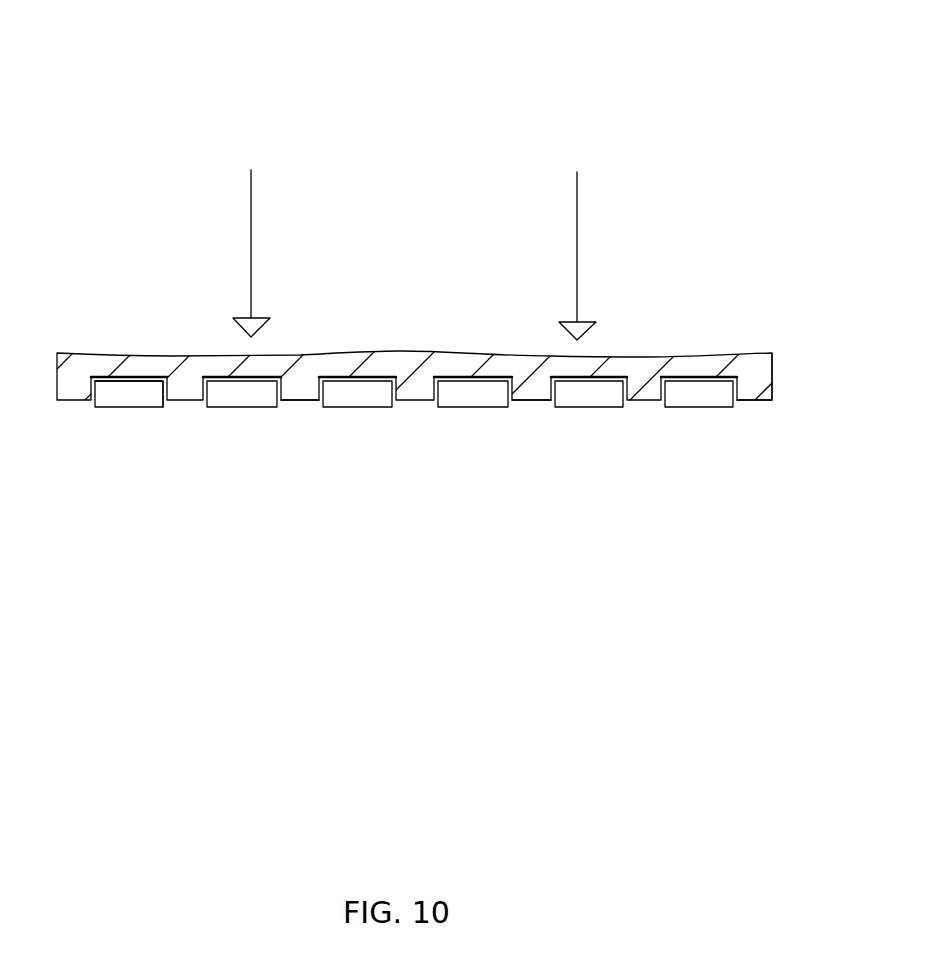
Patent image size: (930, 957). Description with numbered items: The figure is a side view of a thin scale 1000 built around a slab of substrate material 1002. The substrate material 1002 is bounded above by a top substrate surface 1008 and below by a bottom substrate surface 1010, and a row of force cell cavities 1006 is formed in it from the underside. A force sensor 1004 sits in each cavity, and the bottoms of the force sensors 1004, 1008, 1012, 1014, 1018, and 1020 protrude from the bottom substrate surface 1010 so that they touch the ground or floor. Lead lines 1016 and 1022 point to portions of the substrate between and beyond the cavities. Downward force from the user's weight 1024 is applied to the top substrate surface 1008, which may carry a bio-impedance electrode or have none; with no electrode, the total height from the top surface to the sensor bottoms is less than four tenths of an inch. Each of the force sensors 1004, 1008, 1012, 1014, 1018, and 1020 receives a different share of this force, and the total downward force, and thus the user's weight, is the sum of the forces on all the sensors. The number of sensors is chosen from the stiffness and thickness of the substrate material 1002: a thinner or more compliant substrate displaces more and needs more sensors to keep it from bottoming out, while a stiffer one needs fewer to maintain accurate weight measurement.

The thin scale 1000 is at (186, 96).
The substrate material 1002 is at (85, 361).
The force sensor 1004 is at (105, 408).
The force cell cavity 1006 is at (165, 408).
The top substrate surface 1008 is at (165, 358).
The bottom substrate surface 1010 is at (300, 410).
The force sensor 1012 is at (357, 408).
The force sensor 1014 is at (473, 408).
The substrate portion 1016 is at (530, 407).
The force sensor 1018 is at (607, 408).
The force sensor 1020 is at (699, 408).
The substrate end portion 1022 is at (762, 401).
The user's weight 1024 is at (555, 193).